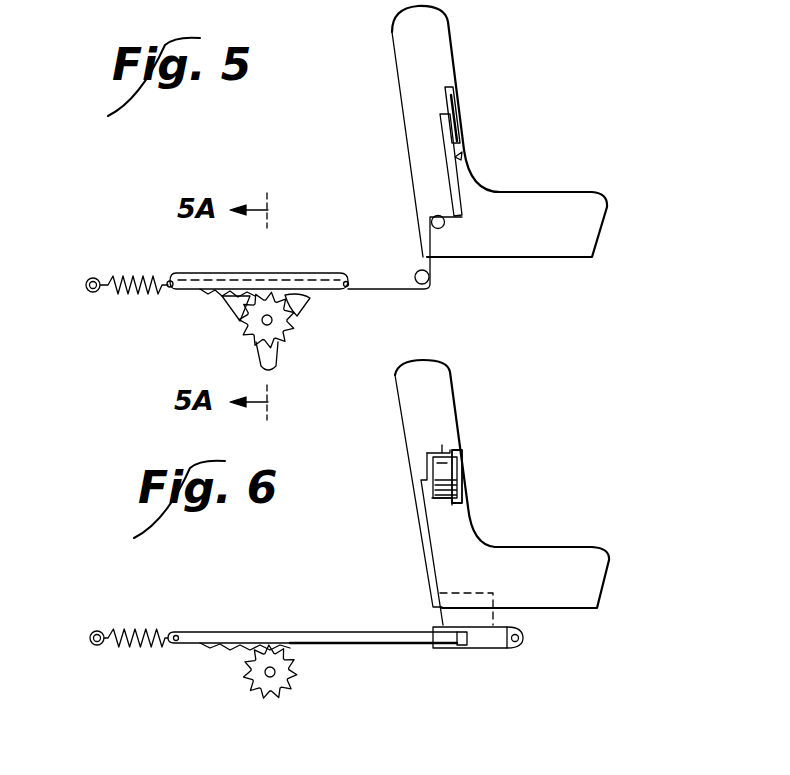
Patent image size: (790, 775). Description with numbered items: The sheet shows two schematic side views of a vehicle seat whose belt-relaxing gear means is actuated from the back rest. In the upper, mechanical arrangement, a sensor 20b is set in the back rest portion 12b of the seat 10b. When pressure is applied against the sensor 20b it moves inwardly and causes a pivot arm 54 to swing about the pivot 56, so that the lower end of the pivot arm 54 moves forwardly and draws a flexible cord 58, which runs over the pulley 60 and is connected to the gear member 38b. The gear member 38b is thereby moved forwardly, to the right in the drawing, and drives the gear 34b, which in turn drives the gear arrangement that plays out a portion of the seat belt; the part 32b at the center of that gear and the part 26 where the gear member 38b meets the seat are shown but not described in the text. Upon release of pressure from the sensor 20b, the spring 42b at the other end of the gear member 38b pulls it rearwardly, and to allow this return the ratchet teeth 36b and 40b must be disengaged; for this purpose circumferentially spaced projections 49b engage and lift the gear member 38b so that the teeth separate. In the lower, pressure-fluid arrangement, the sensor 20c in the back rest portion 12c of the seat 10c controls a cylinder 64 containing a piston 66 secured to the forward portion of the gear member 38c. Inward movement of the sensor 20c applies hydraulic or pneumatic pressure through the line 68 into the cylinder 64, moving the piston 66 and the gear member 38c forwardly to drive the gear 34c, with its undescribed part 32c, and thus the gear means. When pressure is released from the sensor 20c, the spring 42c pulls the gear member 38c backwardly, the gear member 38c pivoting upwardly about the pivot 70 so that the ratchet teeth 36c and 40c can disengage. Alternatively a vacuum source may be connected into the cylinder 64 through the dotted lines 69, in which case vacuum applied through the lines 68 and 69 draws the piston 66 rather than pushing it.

In FIG. 5, the seat 10b is at (578, 242).
In FIG. 5, the back rest portion 12b is at (410, 65).
In FIG. 5, the sensor 20b is at (457, 105).
In FIG. 5, the pivot 26 is at (418, 271).
In FIG. 5, the ratchet wheel 32b is at (275, 322).
In FIG. 5, the gear 34b is at (250, 336).
In FIG. 5, the ratchet teeth 36b is at (295, 338).
In FIG. 5, the gear member 38b is at (321, 266).
In FIG. 5, the ratchet teeth 40b is at (247, 293).
In FIG. 5, the spring 42b is at (130, 280).
In FIG. 5, the projections 49b is at (228, 306).
In FIG. 5, the pivot arm 54 is at (458, 183).
In FIG. 5, the pivot 56 is at (457, 157).
In FIG. 5, the cord 58 is at (432, 243).
In FIG. 5, the pulley 60 is at (431, 221).
In FIG. 6, the seat 10c is at (597, 567).
In FIG. 6, the back rest portion 12c is at (450, 405).
In FIG. 6, the sensor 20c is at (466, 470).
In FIG. 6, the ratchet wheel 32c is at (276, 670).
In FIG. 6, the gear 34c is at (247, 663).
In FIG. 6, the ratchet teeth 36c is at (288, 692).
In FIG. 6, the gear member 38c is at (349, 631).
In FIG. 6, the ratchet teeth 40c is at (243, 650).
In FIG. 6, the spring 42c is at (137, 630).
In FIG. 6, the cylinder 64 is at (497, 650).
In FIG. 6, the piston 66 is at (462, 647).
In FIG. 6, the line 68 is at (420, 533).
In FIG. 6, the dotted lines 69 is at (477, 589).
In FIG. 6, the pivot 70 is at (523, 637).